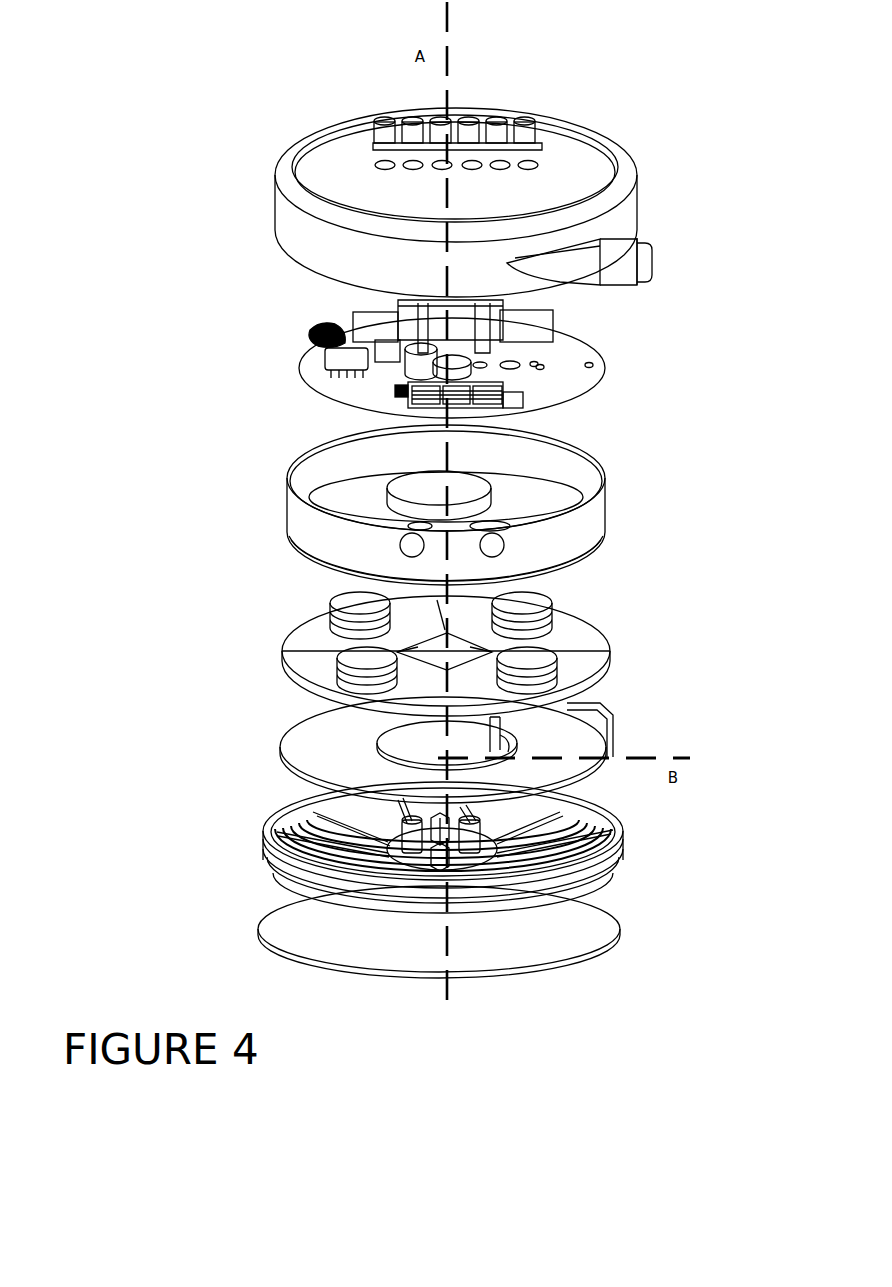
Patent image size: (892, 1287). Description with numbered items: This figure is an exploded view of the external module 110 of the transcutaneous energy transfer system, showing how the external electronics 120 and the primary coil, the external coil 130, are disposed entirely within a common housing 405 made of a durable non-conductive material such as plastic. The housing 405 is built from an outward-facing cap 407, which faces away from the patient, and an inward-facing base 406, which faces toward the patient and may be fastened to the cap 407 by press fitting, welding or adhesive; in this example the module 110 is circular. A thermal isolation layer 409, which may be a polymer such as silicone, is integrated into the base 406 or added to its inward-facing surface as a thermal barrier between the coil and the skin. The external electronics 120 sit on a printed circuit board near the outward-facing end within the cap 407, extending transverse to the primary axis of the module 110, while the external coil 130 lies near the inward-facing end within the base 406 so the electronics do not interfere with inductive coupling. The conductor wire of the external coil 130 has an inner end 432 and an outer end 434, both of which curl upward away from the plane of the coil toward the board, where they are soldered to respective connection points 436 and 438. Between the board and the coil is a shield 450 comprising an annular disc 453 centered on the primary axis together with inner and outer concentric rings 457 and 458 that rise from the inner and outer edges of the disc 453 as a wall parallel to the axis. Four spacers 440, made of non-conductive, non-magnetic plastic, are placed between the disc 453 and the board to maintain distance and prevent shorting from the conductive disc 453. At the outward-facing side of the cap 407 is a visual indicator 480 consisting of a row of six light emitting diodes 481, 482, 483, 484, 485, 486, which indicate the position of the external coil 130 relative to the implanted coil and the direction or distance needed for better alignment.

The housing 405 is at (739, 75).
The cap 407 is at (280, 208).
The visual indicator 480 is at (533, 117).
The light emitting diode 481 is at (383, 170).
The light emitting diode 482 is at (412, 170).
The light emitting diode 483 is at (443, 170).
The light emitting diode 484 is at (471, 170).
The light emitting diode 485 is at (500, 170).
The light emitting diode 486 is at (528, 170).
The external electronics 120 is at (353, 318).
The connection point 438 is at (592, 362).
The connection point 436 is at (542, 369).
The outer concentric ring 458 is at (287, 483).
The inner concentric ring 457 is at (500, 502).
The shield 450 is at (657, 436).
The annular disc 453 is at (568, 642).
The spacers 440 is at (292, 673).
The outer end 434 is at (620, 720).
The external coil 130 is at (281, 745).
The inner end 432 is at (503, 727).
The base 406 is at (264, 818).
The thermal isolation layer 409 is at (613, 910).
The external module 110 is at (459, 1073).